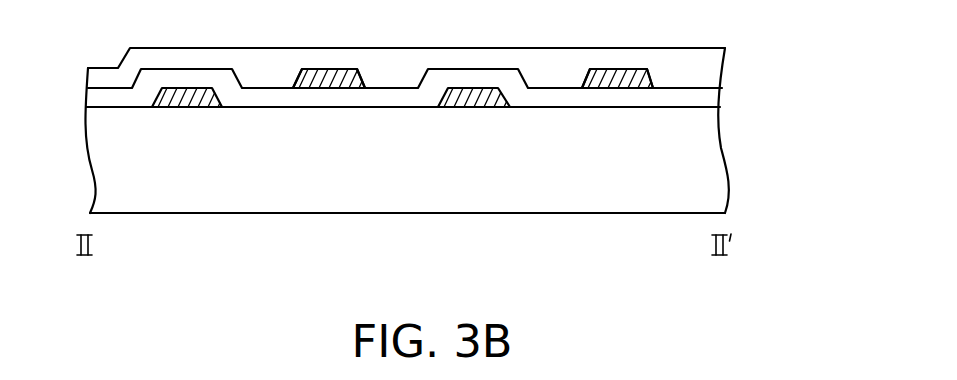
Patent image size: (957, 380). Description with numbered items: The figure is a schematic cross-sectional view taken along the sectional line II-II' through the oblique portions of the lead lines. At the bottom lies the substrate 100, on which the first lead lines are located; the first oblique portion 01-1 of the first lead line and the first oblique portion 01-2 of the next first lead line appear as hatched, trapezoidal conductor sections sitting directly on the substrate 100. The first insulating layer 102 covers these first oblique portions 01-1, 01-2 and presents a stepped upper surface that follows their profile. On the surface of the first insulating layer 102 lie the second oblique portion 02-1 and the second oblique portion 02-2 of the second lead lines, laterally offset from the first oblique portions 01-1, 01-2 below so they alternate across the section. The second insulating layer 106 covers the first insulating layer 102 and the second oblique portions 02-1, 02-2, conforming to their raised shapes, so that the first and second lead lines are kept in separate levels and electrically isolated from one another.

The substrate 100 is at (718, 160).
The first insulating layer 102 is at (713, 98).
The second insulating layer 106 is at (715, 70).
The first oblique portion 01-1 is at (182, 95).
The second oblique portion 02-1 is at (322, 76).
The first oblique portion 01-2 is at (472, 95).
The second oblique portion 02-2 is at (613, 76).